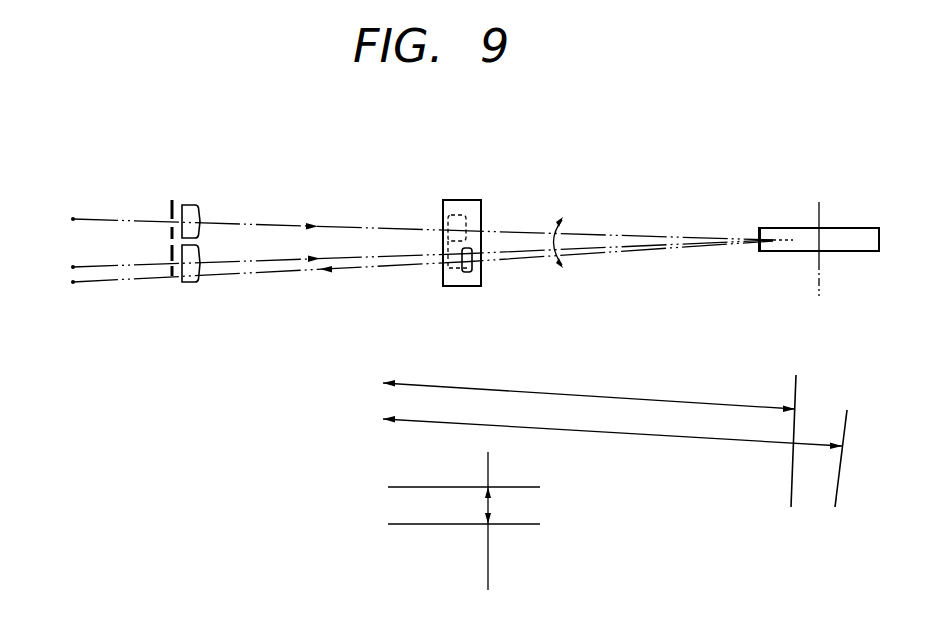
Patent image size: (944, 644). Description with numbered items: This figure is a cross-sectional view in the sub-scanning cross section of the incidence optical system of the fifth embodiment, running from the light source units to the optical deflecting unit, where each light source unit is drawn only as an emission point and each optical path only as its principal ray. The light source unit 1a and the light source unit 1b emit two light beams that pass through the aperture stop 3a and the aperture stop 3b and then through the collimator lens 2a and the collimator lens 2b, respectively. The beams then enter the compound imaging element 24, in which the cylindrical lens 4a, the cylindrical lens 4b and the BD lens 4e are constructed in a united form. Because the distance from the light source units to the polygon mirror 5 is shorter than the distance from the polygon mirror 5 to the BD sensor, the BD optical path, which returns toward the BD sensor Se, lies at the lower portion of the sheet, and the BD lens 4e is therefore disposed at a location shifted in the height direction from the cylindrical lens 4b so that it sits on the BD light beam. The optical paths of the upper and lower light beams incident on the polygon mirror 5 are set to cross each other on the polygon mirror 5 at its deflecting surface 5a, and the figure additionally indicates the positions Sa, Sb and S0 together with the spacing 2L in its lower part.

The light source unit 1a is at (73, 219).
The light source unit 1b is at (73, 267).
The collimator lens 2a is at (190, 205).
The collimator lens 2b is at (190, 282).
The aperture stop 3a is at (170, 208).
The aperture stop 3b is at (170, 252).
The compound imaging element 24 is at (443, 222).
The cylindrical lens 4a is at (457, 215).
The cylindrical lens 4b is at (448, 265).
The BD lens 4e is at (467, 272).
The polygon mirror 5 is at (849, 237).
The deflecting surface 5a is at (760, 238).
The BD sensor Se is at (73, 284).
The beam position of first light beam Sa is at (790, 253).
The beam position of second light beam Sb is at (790, 510).
The reference beam position S0 is at (835, 512).
The spacing between beam positions 2L is at (464, 520).